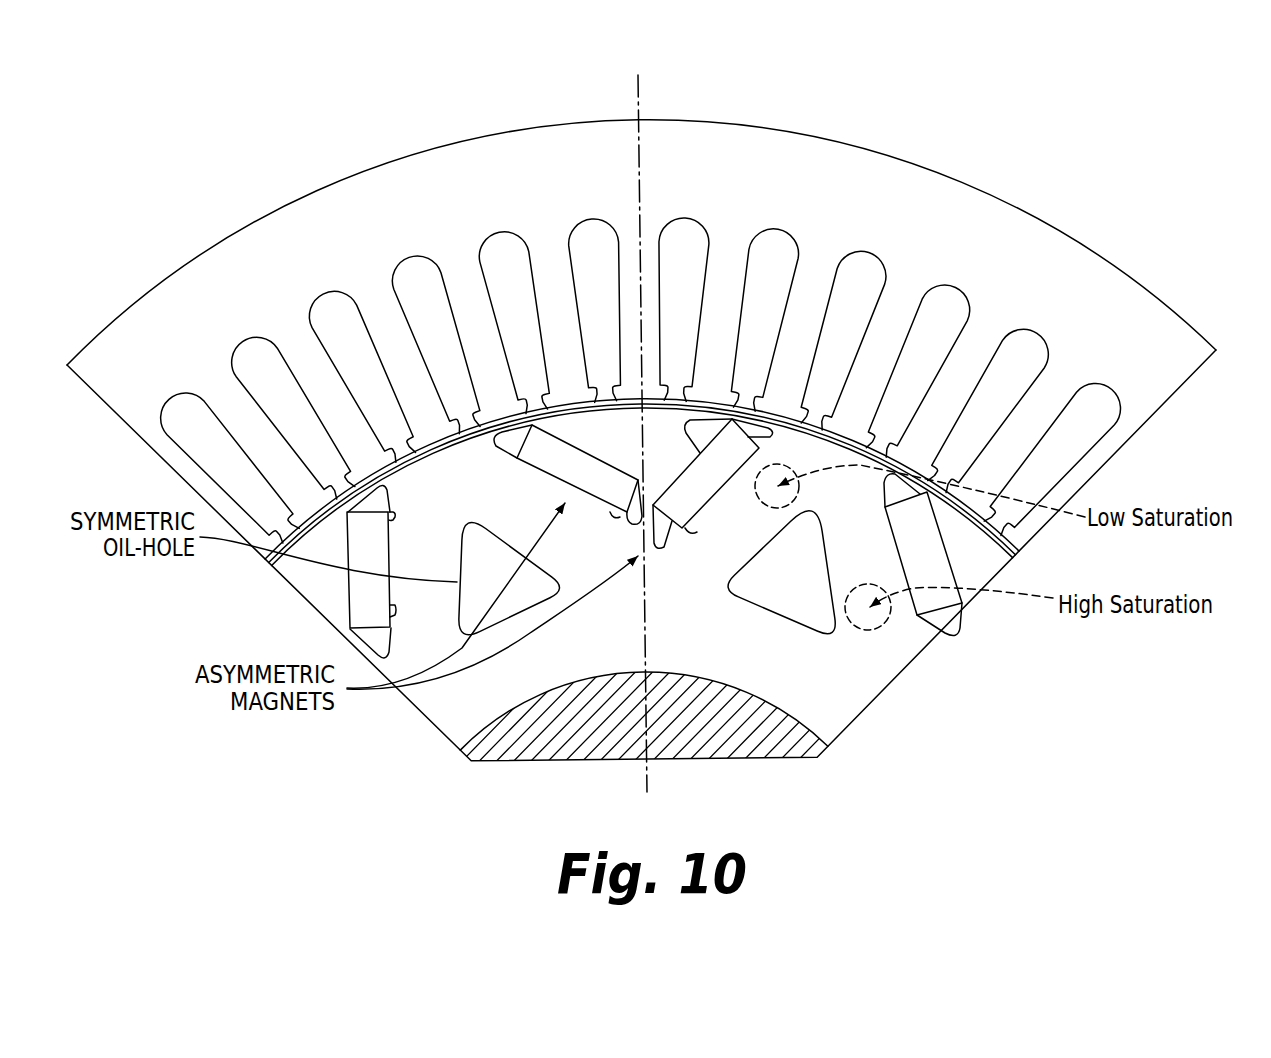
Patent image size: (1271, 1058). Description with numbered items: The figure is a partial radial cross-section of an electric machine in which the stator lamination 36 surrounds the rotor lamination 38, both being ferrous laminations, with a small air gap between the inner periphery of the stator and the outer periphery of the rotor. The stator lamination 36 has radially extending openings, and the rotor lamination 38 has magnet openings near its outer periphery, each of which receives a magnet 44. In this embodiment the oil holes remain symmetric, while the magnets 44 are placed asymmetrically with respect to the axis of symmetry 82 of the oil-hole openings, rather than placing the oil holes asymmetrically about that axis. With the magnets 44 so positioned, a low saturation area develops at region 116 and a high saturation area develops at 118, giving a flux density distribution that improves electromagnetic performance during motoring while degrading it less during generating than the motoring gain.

The stator lamination 36 is at (889, 182).
The rotor lamination 38 is at (975, 614).
The magnet 44 is at (590, 417).
The axis of symmetry 82 is at (640, 108).
The low saturation region 116 is at (762, 500).
The high saturation area 118 is at (880, 625).